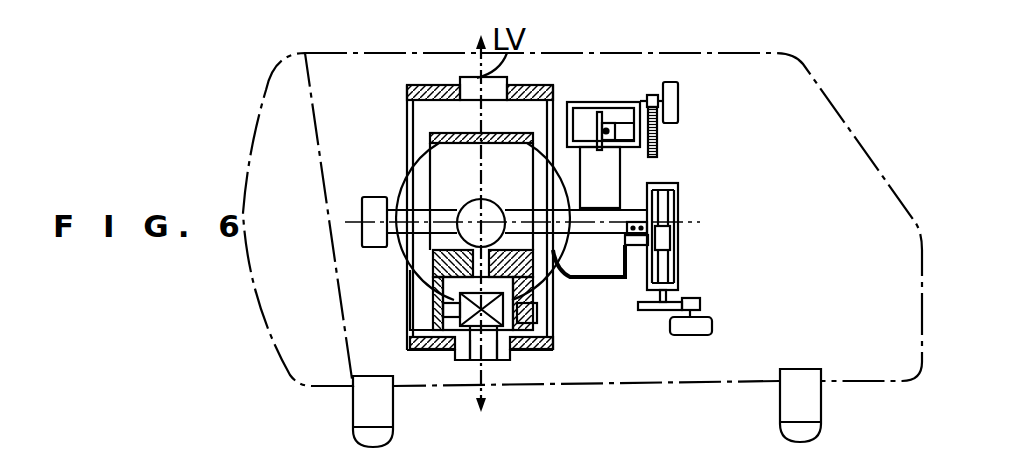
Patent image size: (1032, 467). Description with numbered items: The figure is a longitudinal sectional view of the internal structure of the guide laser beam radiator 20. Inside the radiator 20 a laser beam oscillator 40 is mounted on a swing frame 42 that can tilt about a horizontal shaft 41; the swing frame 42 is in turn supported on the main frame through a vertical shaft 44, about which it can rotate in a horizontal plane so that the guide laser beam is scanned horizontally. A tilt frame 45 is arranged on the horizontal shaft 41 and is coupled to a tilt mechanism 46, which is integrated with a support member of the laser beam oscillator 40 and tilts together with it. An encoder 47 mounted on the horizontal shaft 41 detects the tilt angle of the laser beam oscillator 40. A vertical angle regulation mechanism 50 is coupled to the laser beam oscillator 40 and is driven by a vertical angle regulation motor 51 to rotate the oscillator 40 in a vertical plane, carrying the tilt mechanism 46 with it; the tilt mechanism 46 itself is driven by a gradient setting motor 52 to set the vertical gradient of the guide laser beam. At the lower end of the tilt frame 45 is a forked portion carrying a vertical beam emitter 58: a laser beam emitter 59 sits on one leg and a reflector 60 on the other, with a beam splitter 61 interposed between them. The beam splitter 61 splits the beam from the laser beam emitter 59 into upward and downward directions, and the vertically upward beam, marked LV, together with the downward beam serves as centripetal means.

The guide laser beam radiator 20 is at (848, 127).
The laser beam oscillator 40 is at (370, 197).
The horizontal shaft 41 is at (492, 207).
The swing frame 42 is at (407, 109).
The vertical shaft 44 is at (462, 82).
The tilt frame 45 is at (430, 139).
The tilt mechanism 46 is at (712, 288).
The encoder 47 is at (410, 258).
The vertical angle regulation mechanism 50 is at (618, 100).
The vertical angle regulation motor 51 is at (678, 100).
The gradient setting motor 52 is at (703, 333).
The vertical beam emitter 58 is at (520, 342).
The laser beam emitter 59 is at (553, 323).
The reflector 60 is at (445, 335).
The beam splitter 61 is at (472, 362).